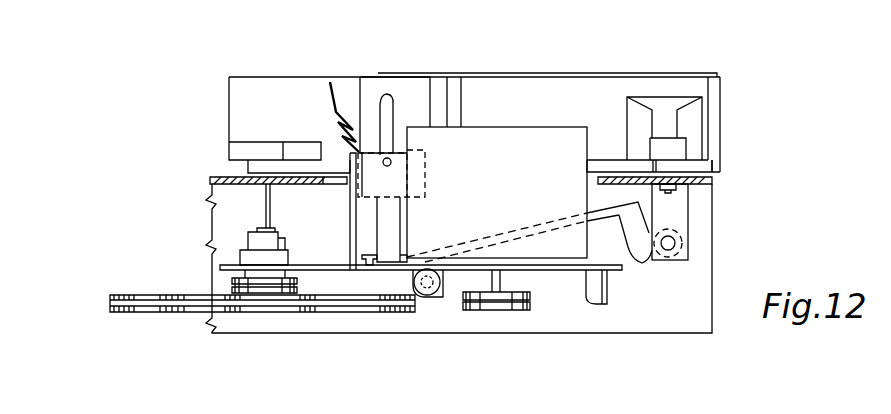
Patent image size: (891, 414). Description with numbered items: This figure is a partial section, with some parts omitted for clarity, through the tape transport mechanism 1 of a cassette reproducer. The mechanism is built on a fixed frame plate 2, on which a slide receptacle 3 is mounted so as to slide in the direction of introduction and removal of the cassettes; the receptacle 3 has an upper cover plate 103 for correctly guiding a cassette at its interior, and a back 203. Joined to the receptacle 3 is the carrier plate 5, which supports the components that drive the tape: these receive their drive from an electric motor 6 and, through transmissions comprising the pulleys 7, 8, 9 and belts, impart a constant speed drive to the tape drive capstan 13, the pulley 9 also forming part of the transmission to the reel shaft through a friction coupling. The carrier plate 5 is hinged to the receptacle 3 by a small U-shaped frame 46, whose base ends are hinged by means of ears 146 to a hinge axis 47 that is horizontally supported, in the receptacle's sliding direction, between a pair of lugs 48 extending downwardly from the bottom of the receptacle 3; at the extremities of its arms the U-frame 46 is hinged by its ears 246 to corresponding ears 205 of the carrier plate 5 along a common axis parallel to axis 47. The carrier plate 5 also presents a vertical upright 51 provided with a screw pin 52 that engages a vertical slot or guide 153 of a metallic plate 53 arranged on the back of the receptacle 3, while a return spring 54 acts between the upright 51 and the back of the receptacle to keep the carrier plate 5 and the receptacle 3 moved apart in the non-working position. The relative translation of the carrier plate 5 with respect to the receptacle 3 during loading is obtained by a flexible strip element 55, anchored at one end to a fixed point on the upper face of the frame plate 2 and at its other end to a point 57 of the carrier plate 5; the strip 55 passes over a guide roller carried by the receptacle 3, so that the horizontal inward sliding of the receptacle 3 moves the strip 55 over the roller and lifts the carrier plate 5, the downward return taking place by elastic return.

The tape transport mechanism 1 is at (671, 69).
The fixed frame plate 2 is at (210, 180).
The slide receptacle 3 is at (752, 108).
The carrier plate 5 is at (577, 269).
The electric motor 6 is at (512, 133).
The pulley 7 is at (532, 306).
The pulley 8 is at (169, 311).
The pulley 9 is at (232, 281).
The tape drive capstan 13 is at (260, 202).
The U-shaped frame 46 is at (608, 214).
The hinge axis 47 is at (675, 240).
The lug 48 is at (682, 203).
The vertical upright 51 is at (372, 192).
The screw pin 52 is at (392, 165).
The metallic plate 53 is at (369, 82).
The return spring 54 is at (328, 109).
The flexible strip element 55 is at (387, 228).
The anchoring point 57 is at (370, 270).
The upper cover plate 103 is at (553, 73).
The ear 146 is at (643, 253).
The vertical slot or guide 153 is at (394, 102).
The back of the receptacle 203 is at (272, 87).
The ear 205 is at (443, 297).
The ear 246 is at (440, 262).